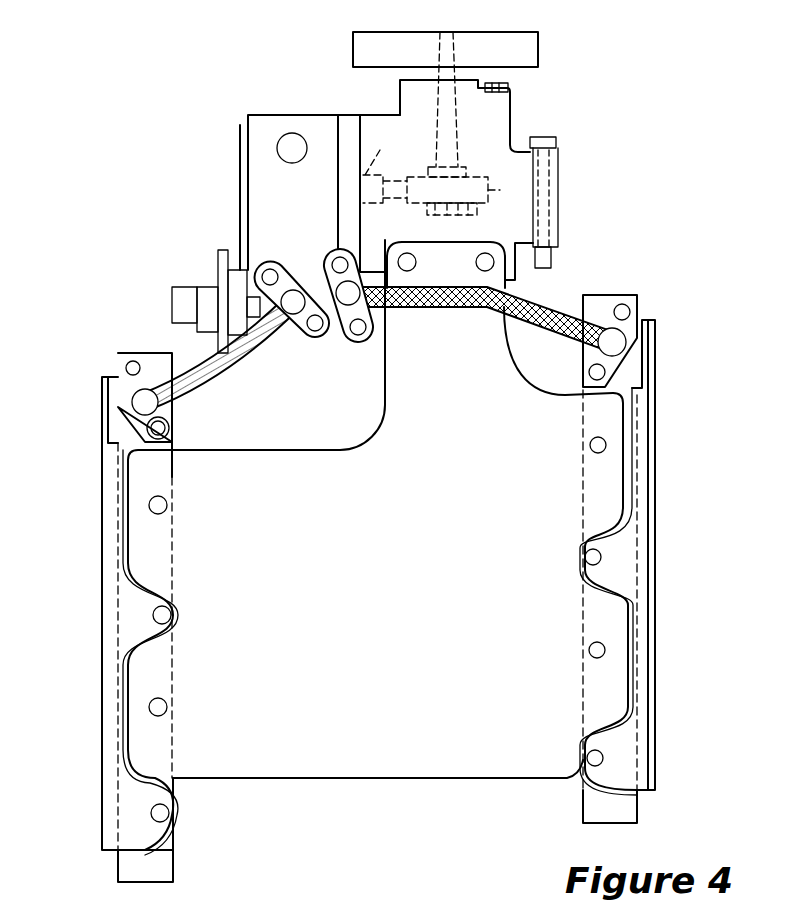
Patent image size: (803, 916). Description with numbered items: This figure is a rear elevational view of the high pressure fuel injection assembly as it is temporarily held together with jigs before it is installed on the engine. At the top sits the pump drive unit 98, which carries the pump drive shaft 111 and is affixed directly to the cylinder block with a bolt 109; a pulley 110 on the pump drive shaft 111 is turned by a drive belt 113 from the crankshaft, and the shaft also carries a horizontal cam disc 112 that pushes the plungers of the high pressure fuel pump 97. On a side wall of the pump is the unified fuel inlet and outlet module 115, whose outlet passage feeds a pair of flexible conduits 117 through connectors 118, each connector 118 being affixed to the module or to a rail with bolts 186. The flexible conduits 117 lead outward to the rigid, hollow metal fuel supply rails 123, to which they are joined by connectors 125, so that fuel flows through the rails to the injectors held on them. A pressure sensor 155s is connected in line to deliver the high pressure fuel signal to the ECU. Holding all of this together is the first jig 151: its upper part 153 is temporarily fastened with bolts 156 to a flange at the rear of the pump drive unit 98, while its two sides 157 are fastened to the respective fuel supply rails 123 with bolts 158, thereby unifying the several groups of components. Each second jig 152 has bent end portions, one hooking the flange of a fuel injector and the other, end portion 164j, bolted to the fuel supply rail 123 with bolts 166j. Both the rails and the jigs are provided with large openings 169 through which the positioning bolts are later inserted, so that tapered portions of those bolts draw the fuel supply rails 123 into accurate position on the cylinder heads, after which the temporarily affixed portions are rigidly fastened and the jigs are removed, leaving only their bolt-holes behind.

The high pressure fuel pump 97 is at (277, 114).
The pump drive unit 98 is at (513, 136).
The bolt 109 is at (557, 140).
The pulley 110 is at (540, 48).
The pump drive shaft 111 is at (487, 112).
The cam disc 112 is at (490, 192).
The drive belt 113 is at (380, 150).
The unified fuel inlet and outlet module 115 is at (283, 350).
The flexible conduit 117 is at (540, 330).
The connector 118 is at (355, 340).
The fuel supply rail 123 is at (603, 294).
The connector 125 is at (620, 343).
The first jig 151 is at (355, 597).
The second jig 152 is at (655, 545).
The upper part of first jig 153 is at (458, 258).
The pressure sensor 155s is at (184, 286).
The bolt 156 is at (485, 270).
The side of first jig 157 is at (136, 532).
The bolt 158 is at (600, 443).
The end portion of second jig 164j is at (130, 623).
The bolt 166j is at (590, 757).
The large opening 169 is at (170, 813).
The bolt 186 is at (160, 435).